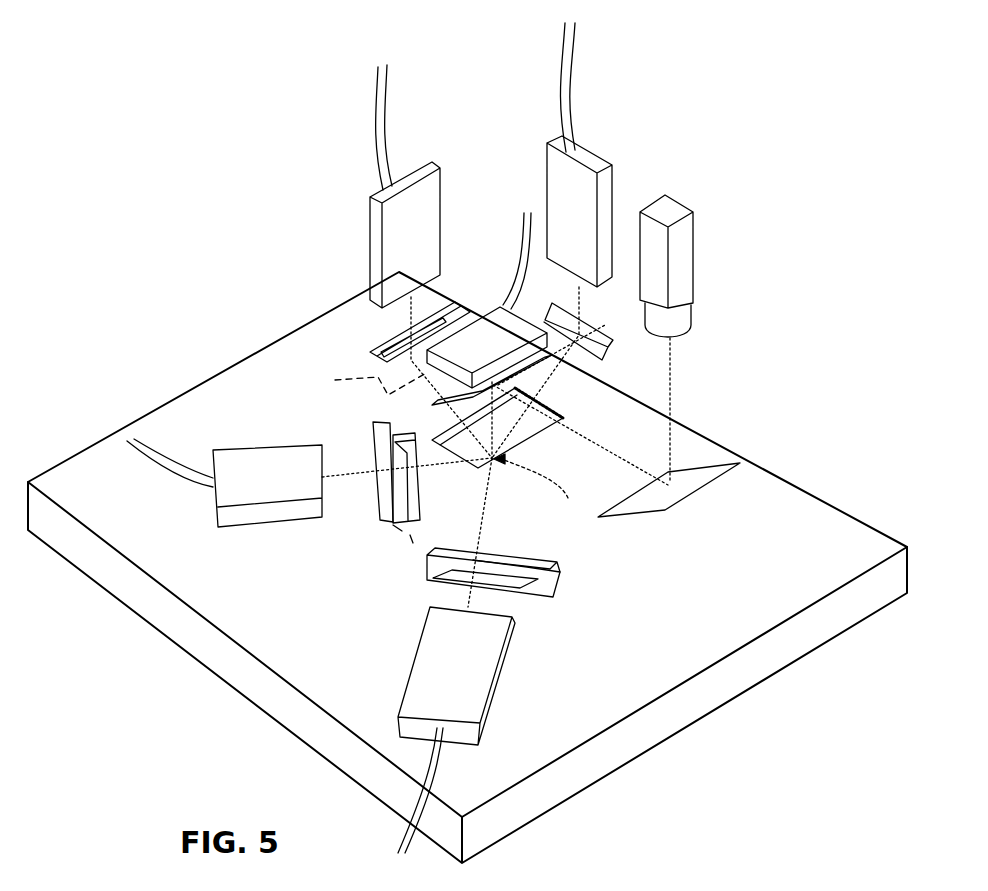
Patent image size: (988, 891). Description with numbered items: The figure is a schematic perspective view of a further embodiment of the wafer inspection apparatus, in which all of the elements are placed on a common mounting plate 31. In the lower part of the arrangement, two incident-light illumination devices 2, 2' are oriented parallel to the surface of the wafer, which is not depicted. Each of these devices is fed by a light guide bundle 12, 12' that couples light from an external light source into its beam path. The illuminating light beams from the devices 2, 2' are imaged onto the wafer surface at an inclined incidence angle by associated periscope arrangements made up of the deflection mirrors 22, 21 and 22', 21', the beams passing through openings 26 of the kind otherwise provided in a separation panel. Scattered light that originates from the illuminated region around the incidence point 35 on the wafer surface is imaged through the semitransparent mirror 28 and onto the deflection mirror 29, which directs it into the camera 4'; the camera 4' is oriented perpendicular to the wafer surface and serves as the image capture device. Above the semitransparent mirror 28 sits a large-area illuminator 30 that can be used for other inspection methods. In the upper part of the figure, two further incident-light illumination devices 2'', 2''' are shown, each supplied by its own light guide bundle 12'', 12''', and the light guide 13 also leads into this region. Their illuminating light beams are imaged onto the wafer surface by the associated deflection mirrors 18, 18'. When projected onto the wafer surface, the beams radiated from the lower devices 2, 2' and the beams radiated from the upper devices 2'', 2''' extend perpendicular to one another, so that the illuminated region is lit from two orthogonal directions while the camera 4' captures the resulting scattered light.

The incident-light illumination device 2 is at (267, 461).
The incident-light illumination device 2' is at (475, 676).
The incident-light illumination device 2'' is at (372, 235).
The incident-light illumination device 2''' is at (551, 211).
The camera 4' is at (697, 266).
The light guide bundle 12 is at (170, 492).
The light guide bundle 12' is at (390, 794).
The light guide bundle 12'' is at (344, 127).
The light guide bundle 12''' is at (531, 87).
The optical fiber 13 is at (523, 230).
The deflection mirror 18 is at (368, 382).
The deflection mirror 18' is at (607, 346).
The deflection mirror 21 is at (378, 559).
The deflection mirror 21' is at (507, 608).
The deflection mirror 22 is at (361, 489).
The deflection mirror 22' is at (495, 552).
The opening 26 is at (380, 348).
The semitransparent mirror 28 is at (432, 405).
The deflection mirror 29 is at (683, 487).
The large-area illuminator 30 is at (484, 314).
The mounting plate 31 is at (712, 650).
The incidence point 35 is at (548, 483).